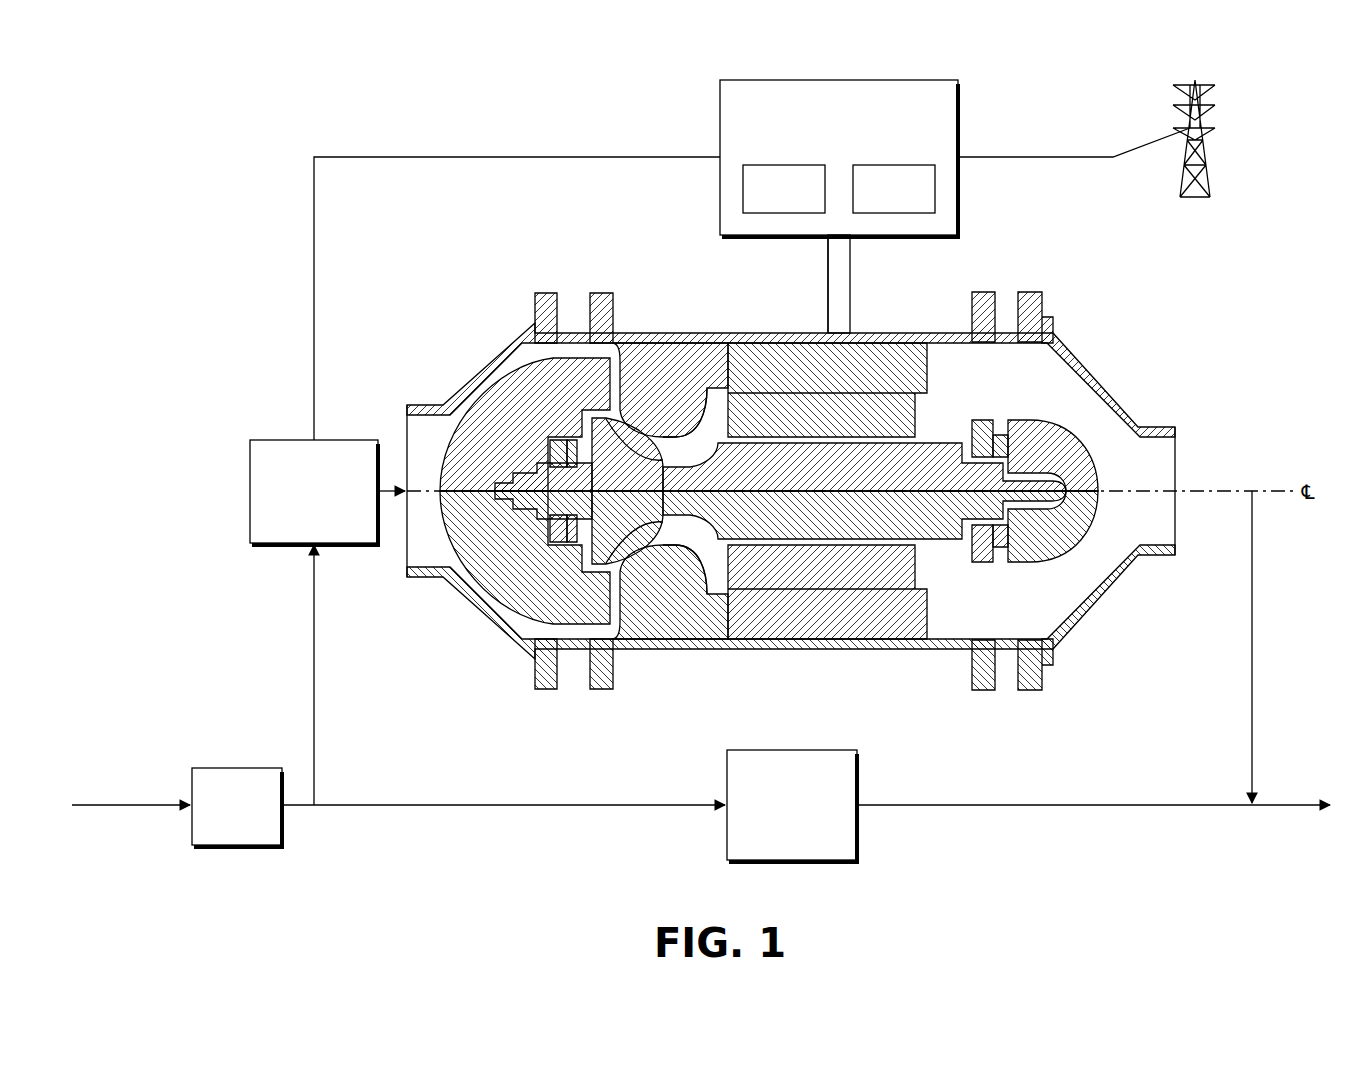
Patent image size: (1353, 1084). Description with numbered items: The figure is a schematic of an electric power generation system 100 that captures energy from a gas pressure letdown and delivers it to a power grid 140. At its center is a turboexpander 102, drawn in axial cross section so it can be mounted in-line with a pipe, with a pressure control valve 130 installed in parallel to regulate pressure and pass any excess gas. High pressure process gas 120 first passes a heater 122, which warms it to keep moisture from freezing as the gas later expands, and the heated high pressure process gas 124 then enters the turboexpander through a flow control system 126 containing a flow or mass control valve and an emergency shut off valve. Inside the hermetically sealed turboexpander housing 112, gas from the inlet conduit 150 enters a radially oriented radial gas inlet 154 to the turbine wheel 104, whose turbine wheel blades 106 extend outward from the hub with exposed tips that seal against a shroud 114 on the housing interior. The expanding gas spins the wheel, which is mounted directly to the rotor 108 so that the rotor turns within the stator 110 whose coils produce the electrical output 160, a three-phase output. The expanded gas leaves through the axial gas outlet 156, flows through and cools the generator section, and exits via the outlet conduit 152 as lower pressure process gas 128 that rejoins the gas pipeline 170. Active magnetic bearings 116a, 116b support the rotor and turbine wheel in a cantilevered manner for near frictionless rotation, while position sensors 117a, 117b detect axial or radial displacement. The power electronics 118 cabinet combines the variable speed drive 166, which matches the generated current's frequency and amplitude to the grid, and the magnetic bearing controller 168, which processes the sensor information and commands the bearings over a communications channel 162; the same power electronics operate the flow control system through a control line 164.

The electric power generation system 100 is at (205, 137).
The turboexpander 102 is at (456, 340).
The turbine wheel 104 is at (600, 557).
The turbine wheel blades 106 is at (650, 542).
The rotor 108 is at (935, 525).
The stator 110 is at (806, 423).
The turboexpander housing 112 is at (875, 648).
The shroud 114 is at (633, 550).
The first bearing 116a is at (560, 537).
The second bearing 116b is at (983, 445).
The first position sensor 117a is at (575, 548).
The second position sensor 117b is at (1003, 440).
The power electronics 118 is at (818, 146).
The high pressure process gas 120 is at (143, 807).
The heater 122 is at (216, 834).
The heated high pressure process gas 124 is at (314, 640).
The flow control system 126 is at (293, 532).
The lower pressure process gas 128 is at (1252, 640).
The pressure control valve 130 is at (771, 849).
The power grid 140 is at (1185, 178).
The inlet conduit 150 is at (405, 432).
The outlet conduit 152 is at (1178, 462).
The radial gas inlet 154 is at (618, 390).
The axial gas outlet 156 is at (675, 452).
The electrical output 160 is at (850, 287).
The communications channel 162 is at (828, 287).
The control line 164 is at (458, 157).
The variable speed drive 166 is at (873, 203).
The magnetic bearing controller 168 is at (763, 203).
The gas pipeline 170 is at (1060, 806).